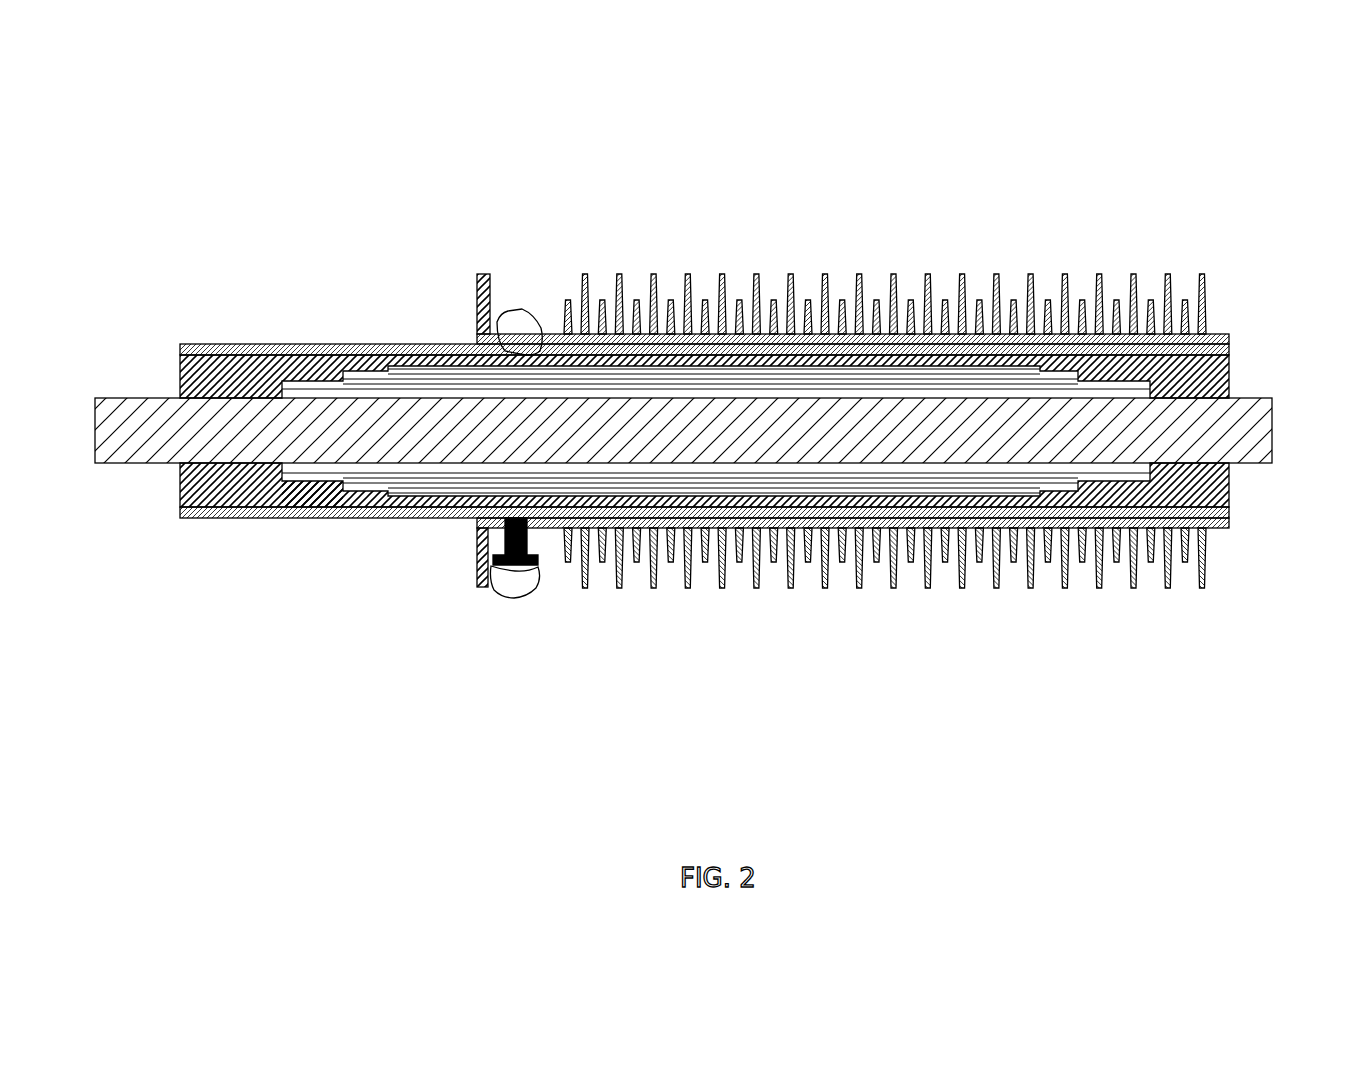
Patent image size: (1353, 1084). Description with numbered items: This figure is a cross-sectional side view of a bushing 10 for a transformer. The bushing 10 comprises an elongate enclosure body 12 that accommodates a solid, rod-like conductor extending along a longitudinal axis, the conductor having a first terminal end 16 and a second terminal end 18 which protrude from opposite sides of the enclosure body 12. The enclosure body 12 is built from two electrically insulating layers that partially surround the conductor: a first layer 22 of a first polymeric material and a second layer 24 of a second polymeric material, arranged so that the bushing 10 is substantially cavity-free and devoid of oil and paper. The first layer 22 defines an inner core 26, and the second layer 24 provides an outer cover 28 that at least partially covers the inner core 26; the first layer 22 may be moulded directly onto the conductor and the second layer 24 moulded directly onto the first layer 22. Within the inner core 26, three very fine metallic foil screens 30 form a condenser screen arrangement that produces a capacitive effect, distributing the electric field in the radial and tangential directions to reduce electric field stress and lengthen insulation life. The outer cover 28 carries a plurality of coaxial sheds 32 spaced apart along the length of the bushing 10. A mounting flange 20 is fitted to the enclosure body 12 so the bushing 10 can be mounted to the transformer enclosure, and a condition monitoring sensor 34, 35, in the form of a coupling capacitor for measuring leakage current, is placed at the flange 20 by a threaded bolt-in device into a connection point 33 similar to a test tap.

The bushing 10 is at (702, 417).
The enclosure body 12 is at (306, 344).
The first terminal end 16 is at (95, 420).
The second terminal end 18 is at (1277, 418).
The mounting flange 20 is at (490, 302).
The first layer 22 is at (238, 355).
The second layer 24 is at (228, 520).
The inner core 26 is at (268, 493).
The outer cover 28 is at (386, 521).
The metallic foil screens 30 is at (447, 395).
The coaxial sheds 32 is at (762, 278).
The connection point 33 is at (544, 567).
The condition monitoring sensor 34 is at (521, 602).
The condition monitoring sensor 35 is at (541, 312).